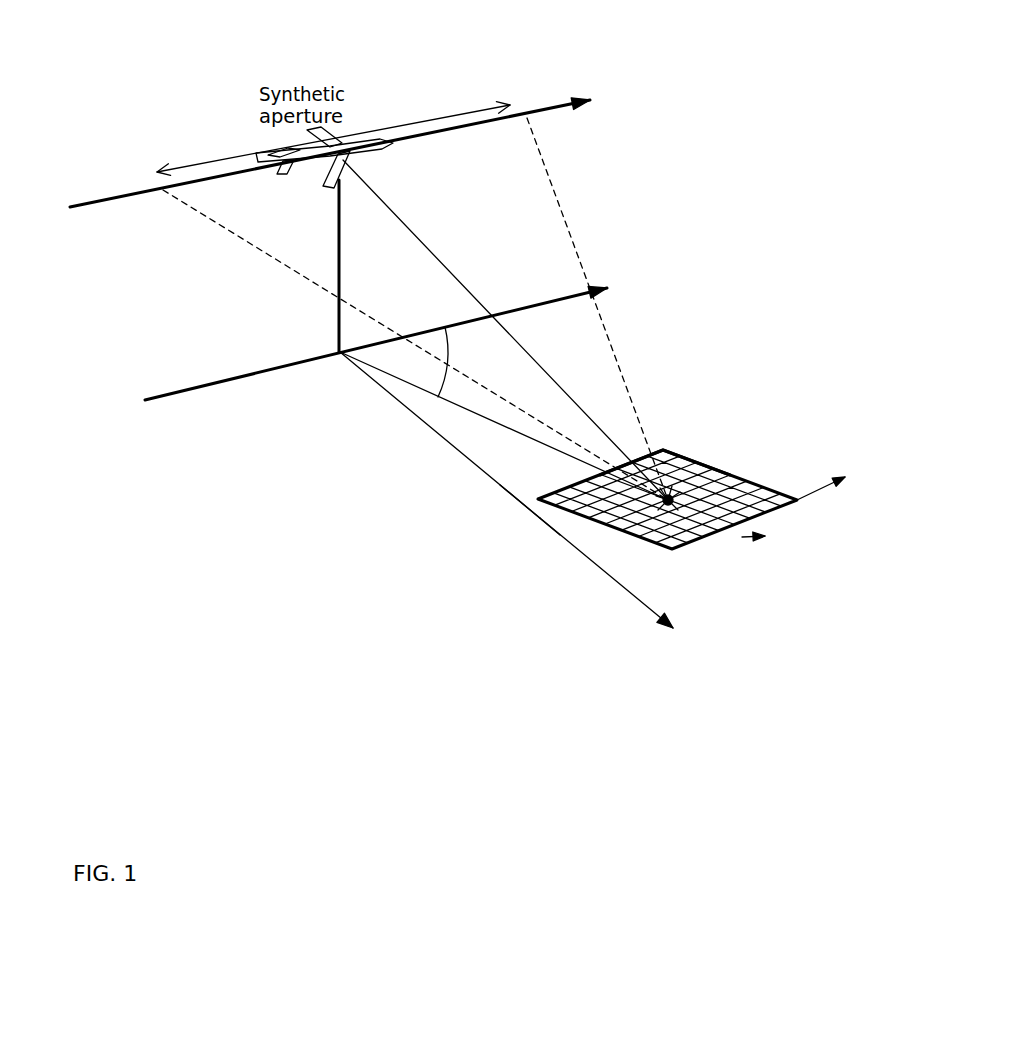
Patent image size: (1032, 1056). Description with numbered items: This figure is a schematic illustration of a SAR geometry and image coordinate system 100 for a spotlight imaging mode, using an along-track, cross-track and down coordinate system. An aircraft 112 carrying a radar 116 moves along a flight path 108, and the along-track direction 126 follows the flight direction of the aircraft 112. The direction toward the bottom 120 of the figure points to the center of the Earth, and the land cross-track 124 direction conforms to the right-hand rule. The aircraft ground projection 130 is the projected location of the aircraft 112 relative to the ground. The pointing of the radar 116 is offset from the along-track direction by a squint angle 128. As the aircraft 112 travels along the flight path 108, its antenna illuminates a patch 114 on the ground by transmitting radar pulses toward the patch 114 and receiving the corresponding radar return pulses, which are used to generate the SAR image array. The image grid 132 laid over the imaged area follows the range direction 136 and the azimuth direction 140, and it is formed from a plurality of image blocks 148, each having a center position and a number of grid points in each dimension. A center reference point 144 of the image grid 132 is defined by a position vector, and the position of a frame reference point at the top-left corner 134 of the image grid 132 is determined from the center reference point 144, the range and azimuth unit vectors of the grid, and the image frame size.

The synthetic aperture radar imaging geometry 100 is at (262, 580).
The flight path 108 is at (545, 108).
The aircraft 112 is at (300, 168).
The patch 114 is at (605, 537).
The radar 116 is at (358, 145).
The bottom 120 is at (338, 308).
The land cross-track direction 124 is at (408, 415).
The along-track 126 is at (603, 287).
The squint angle 128 is at (456, 332).
The ground track point 130 is at (340, 352).
The image grid 132 is at (642, 543).
The top-left corner 134 is at (527, 505).
The range direction 136 is at (740, 533).
The azimuth direction 140 is at (820, 489).
The center reference point 144 is at (680, 490).
The image block 148 is at (668, 452).